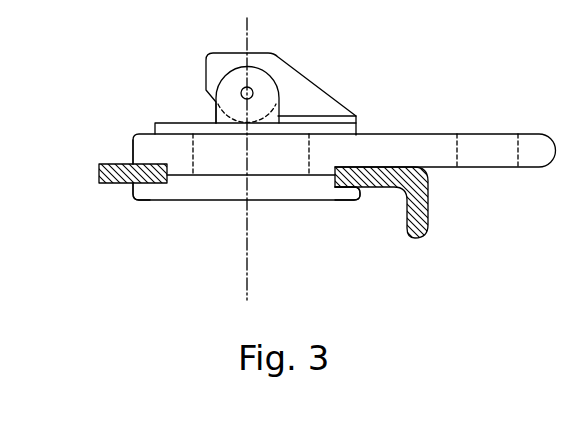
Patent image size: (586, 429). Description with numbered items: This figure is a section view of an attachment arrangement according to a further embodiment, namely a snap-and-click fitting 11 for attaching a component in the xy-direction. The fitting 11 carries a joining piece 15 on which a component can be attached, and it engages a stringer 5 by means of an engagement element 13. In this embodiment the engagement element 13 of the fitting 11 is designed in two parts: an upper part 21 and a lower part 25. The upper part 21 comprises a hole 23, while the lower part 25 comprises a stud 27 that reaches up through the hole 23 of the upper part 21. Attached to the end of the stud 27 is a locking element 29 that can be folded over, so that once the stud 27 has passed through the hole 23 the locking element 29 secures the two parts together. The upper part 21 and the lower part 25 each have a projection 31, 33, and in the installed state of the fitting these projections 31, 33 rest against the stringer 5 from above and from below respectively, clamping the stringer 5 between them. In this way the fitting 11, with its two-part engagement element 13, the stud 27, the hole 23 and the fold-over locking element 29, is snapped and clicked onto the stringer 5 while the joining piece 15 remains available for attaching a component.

The stringer 5 is at (118, 161).
The fitting 11 is at (413, 148).
The engagement element 13 is at (216, 200).
The joining piece 15 is at (492, 150).
The upper part 21 is at (150, 138).
The hole 23 is at (202, 143).
The lower part 25 is at (332, 193).
The stud 27 is at (307, 160).
The locking element 29 is at (298, 88).
The projection 31 is at (119, 162).
The projection 33 is at (155, 193).